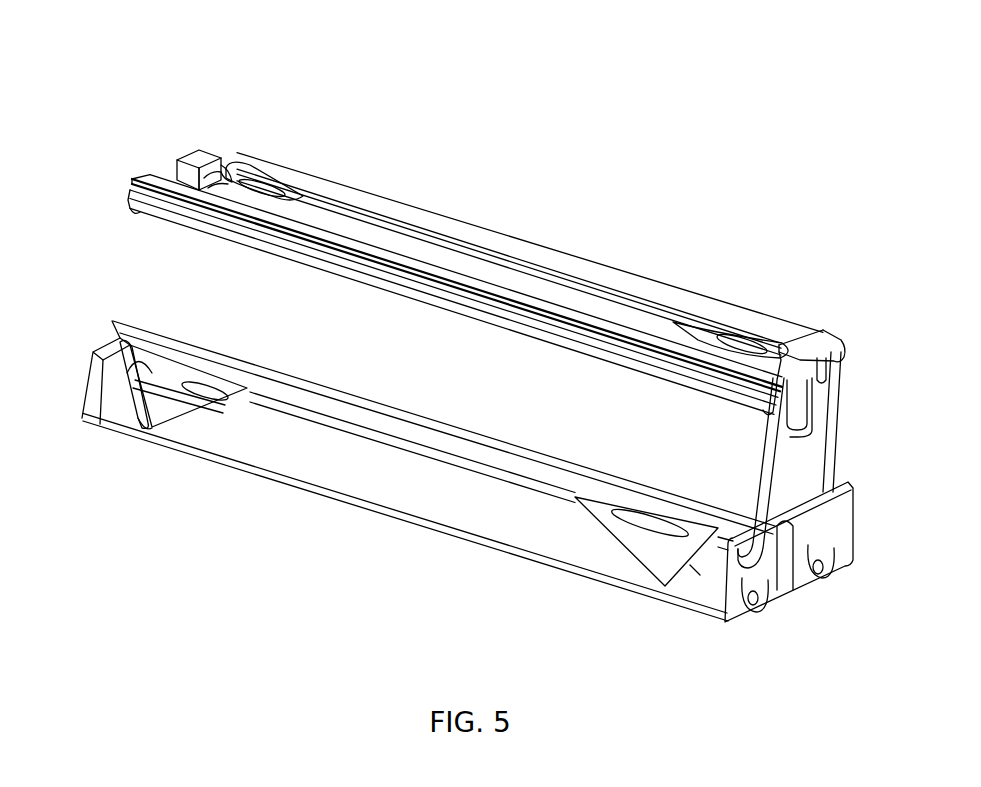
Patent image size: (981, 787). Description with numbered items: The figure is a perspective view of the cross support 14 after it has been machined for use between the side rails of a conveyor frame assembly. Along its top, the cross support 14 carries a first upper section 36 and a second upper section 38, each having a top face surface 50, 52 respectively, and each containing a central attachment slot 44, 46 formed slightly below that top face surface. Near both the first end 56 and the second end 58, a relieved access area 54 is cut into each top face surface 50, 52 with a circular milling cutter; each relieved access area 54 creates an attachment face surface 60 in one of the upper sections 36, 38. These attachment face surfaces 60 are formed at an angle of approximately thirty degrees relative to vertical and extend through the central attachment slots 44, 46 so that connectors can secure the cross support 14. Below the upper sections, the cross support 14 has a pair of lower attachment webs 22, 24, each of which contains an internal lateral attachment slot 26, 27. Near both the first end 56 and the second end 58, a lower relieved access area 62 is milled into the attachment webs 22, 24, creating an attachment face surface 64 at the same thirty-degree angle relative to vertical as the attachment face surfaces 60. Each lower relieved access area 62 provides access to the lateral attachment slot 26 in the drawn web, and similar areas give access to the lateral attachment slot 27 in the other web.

The cross support 14 is at (372, 187).
The lower attachment web 22 is at (740, 608).
The lower attachment web 24 is at (835, 562).
The lateral attachment slot 26 is at (122, 343).
The lateral attachment slot 27 is at (850, 497).
The first upper section 36 is at (150, 170).
The second upper section 38 is at (207, 152).
The central attachment slot 44 is at (148, 218).
The central attachment slot 46 is at (232, 175).
The top face surface 50 is at (595, 300).
The top face surface 52 is at (648, 280).
The relieved access area 54 is at (292, 178).
The first end 56 is at (187, 152).
The second end 58 is at (838, 340).
The attachment face surface 60 is at (218, 160).
The lower relieved access area 62 is at (228, 378).
The attachment face surface 64 is at (130, 392).